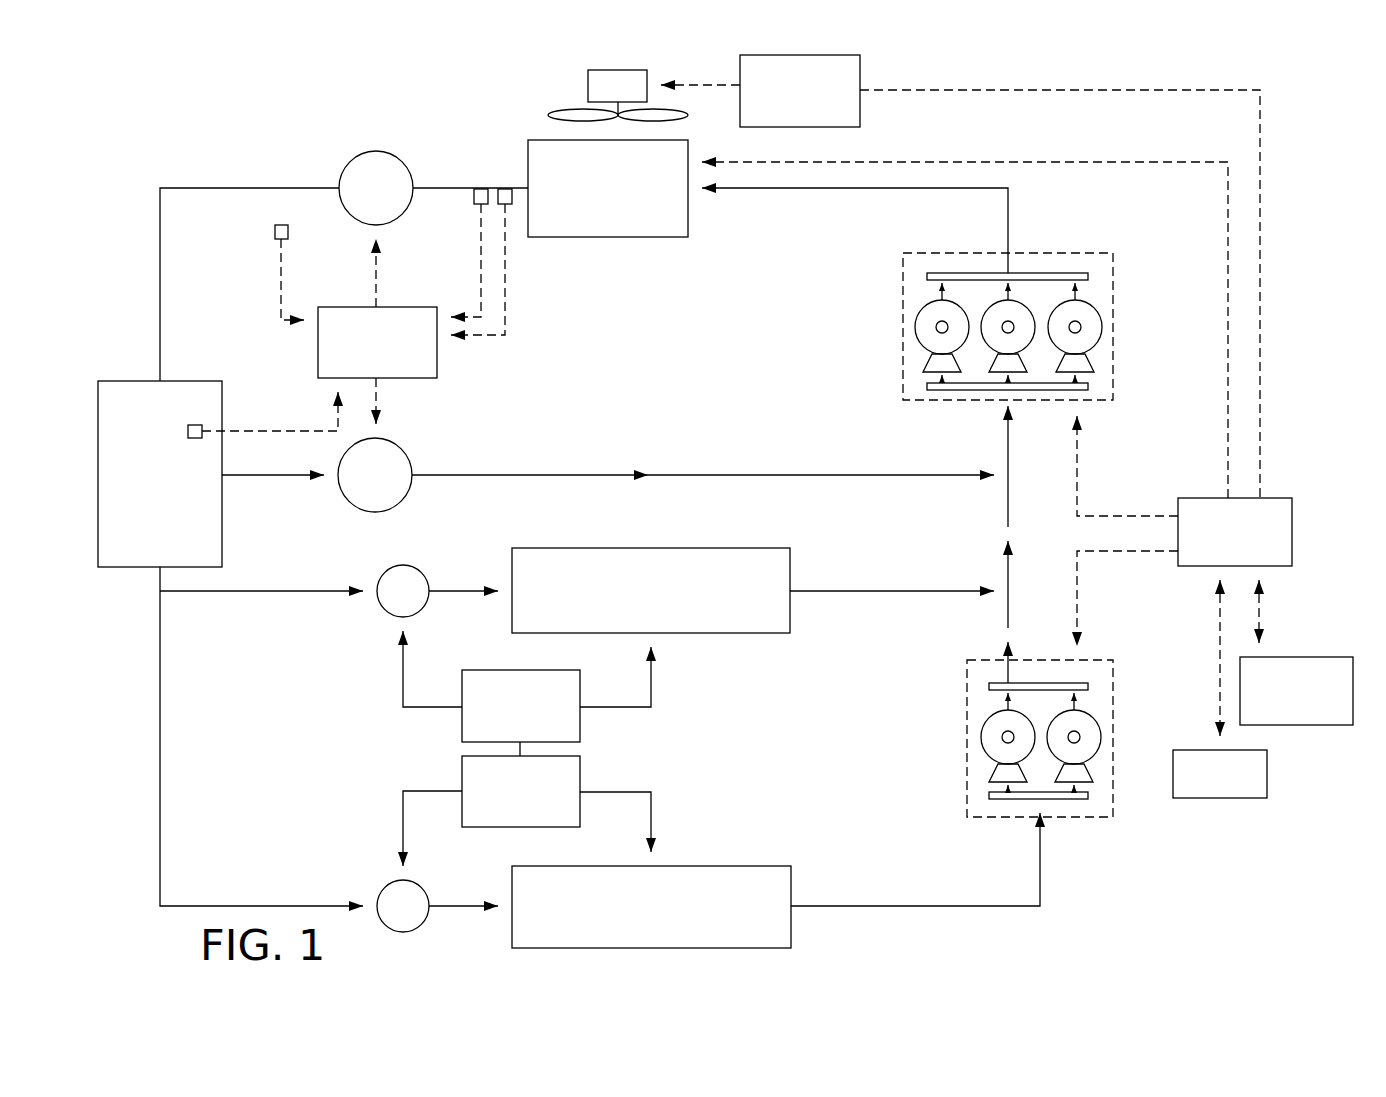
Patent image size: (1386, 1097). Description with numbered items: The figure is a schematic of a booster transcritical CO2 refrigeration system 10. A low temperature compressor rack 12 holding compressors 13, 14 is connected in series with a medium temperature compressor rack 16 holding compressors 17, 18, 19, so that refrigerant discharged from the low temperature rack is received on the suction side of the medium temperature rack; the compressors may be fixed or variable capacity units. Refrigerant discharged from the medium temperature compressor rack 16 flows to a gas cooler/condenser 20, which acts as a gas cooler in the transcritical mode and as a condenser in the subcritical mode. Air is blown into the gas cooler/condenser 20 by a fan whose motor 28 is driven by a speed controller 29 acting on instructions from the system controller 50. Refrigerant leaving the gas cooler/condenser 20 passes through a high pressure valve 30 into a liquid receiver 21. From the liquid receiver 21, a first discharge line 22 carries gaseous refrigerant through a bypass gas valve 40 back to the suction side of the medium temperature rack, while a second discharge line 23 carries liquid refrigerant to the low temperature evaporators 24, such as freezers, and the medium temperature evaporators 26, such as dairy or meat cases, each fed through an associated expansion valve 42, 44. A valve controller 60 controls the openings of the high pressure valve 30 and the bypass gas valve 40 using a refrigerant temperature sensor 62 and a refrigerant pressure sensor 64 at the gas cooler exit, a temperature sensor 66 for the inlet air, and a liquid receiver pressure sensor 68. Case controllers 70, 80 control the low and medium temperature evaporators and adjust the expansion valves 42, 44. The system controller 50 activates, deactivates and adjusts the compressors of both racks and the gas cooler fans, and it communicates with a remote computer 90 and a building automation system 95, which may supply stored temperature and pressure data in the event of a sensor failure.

The booster transcritical CO2 refrigeration system 10 is at (1312, 144).
The low temperature compressor rack 12 is at (1039, 765).
The compressor 13 is at (985, 722).
The compressor 14 is at (1100, 722).
The medium temperature compressor rack 16 is at (1006, 302).
The compressor 17 is at (920, 306).
The compressor 18 is at (1020, 305).
The compressor 19 is at (1100, 313).
The gas cooler/condenser 20 is at (688, 222).
The liquid receiver 21 is at (197, 381).
The first discharge line 22 is at (250, 475).
The second discharge line 23 is at (160, 575).
The low temperature evaporators 24 is at (528, 935).
The medium temperature evaporators 26 is at (533, 619).
The motor 28 is at (634, 98).
The speed controller 29 is at (862, 72).
The high pressure valve 30 is at (381, 151).
The bypass gas valve 40 is at (402, 449).
The expansion valve 42 is at (383, 888).
The expansion valve 44 is at (388, 570).
The system controller 50 is at (1195, 498).
The valve controller 60 is at (412, 307).
The refrigerant temperature sensor 62 is at (503, 189).
The refrigerant pressure sensor 64 is at (478, 189).
The temperature sensor 66 is at (275, 231).
The liquid receiver pressure sensor 68 is at (188, 431).
The case controller 70 is at (487, 827).
The case controller 80 is at (482, 670).
The remote computer 90 is at (1297, 725).
The building automation system 95 is at (1220, 798).